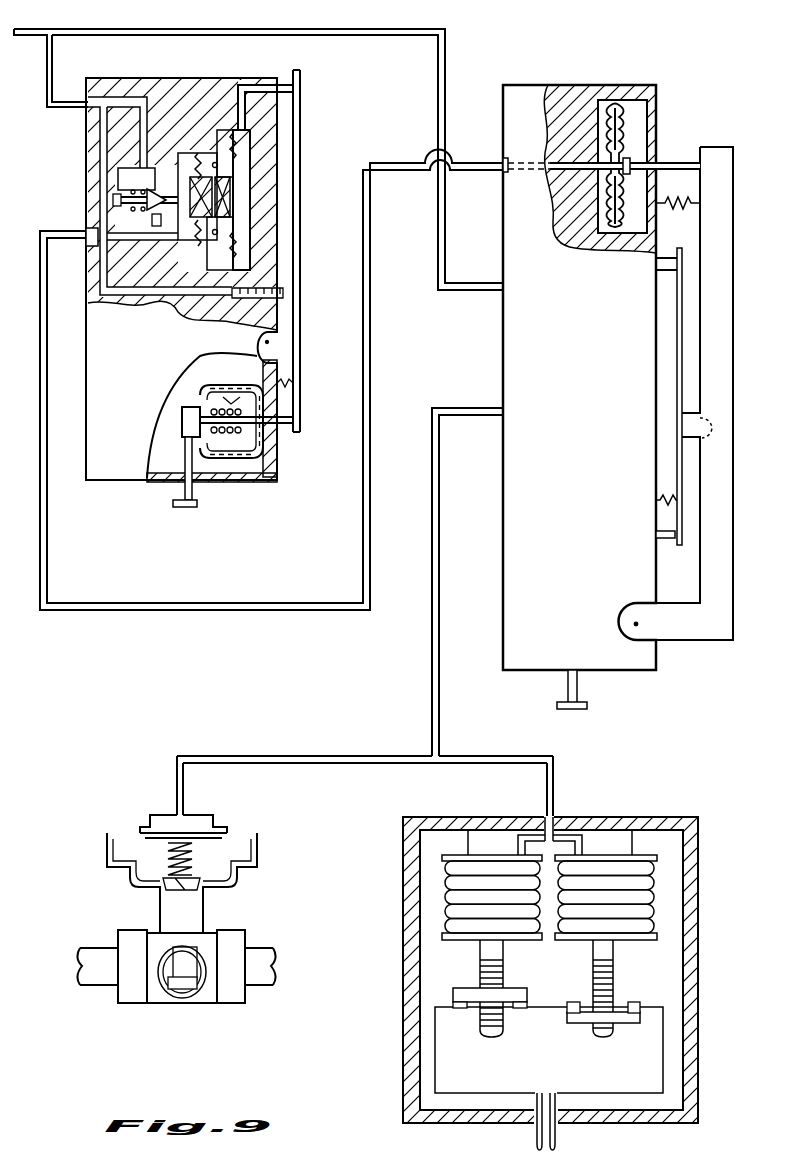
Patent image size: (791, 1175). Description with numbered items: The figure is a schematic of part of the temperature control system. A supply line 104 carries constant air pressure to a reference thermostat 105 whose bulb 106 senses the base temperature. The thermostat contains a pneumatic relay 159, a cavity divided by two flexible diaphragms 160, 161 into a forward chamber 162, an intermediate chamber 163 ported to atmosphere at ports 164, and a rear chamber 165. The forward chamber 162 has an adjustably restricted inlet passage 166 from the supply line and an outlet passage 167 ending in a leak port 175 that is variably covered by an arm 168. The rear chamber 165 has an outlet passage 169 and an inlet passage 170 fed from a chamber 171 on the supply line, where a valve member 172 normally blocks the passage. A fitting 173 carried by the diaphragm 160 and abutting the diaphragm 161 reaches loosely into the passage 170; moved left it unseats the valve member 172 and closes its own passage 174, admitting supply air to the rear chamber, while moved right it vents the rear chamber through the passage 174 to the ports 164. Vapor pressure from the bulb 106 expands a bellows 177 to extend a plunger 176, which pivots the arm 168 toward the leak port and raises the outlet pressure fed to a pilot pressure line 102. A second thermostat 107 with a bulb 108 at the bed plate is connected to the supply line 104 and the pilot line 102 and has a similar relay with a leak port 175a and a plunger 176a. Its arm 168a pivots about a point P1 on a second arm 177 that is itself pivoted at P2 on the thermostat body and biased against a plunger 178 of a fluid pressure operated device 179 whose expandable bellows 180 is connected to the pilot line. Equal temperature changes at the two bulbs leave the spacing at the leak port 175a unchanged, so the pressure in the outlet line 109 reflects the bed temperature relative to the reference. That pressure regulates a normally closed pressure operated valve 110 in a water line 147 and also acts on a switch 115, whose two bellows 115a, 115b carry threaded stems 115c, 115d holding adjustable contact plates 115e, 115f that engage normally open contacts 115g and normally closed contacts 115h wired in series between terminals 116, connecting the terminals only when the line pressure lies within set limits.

The pilot pressure line 102 is at (125, 614).
The supply line 104 is at (313, 31).
The reference thermostat 105 is at (86, 162).
The bulb 106 is at (197, 504).
The thermostat 107 is at (565, 85).
The bulb 108 is at (588, 706).
The outlet line 109 is at (298, 755).
The pressure operated valve 110 is at (212, 820).
The switch 115 is at (698, 893).
The bellows 115a is at (443, 907).
The bellows 115b is at (657, 918).
The threaded stem 115c is at (478, 980).
The threaded stem 115d is at (618, 970).
The contact plate 115e is at (517, 990).
The contact plate 115f is at (585, 1024).
The fixed contacts 115g is at (448, 1010).
The fixed contacts 115h is at (642, 1016).
The terminals 116 is at (556, 1140).
The water line 147 is at (100, 940).
The pneumatic relay 159 is at (207, 79).
The flexible diaphragm 160 is at (186, 153).
The flexible diaphragm 161 is at (250, 128).
The forward chamber 162 is at (247, 158).
The intermediate chamber 163 is at (218, 268).
The ports 164 is at (236, 176).
The rear chamber 165 is at (180, 156).
The inlet passage 166 is at (176, 308).
The outlet passage 167 is at (245, 82).
The arm 168 is at (300, 179).
The arm 168a is at (677, 385).
The outlet passage 169 is at (103, 262).
The inlet passage 170 is at (158, 220).
The chamber 171 is at (118, 177).
The valve member 172 is at (116, 200).
The fitting 173 is at (232, 198).
The passage 174 is at (236, 209).
The leak port 175 is at (298, 72).
The leak port 175a is at (663, 272).
The plunger 176 is at (282, 440).
The plunger 176a is at (665, 540).
The bellows / second arm 177 is at (250, 382).
The plunger 178 is at (688, 160).
The fluid pressure operated device 179 is at (661, 131).
The expandable bellows 180 is at (650, 112).
The pivot point P1 is at (712, 418).
The pivot point P2 is at (637, 628).